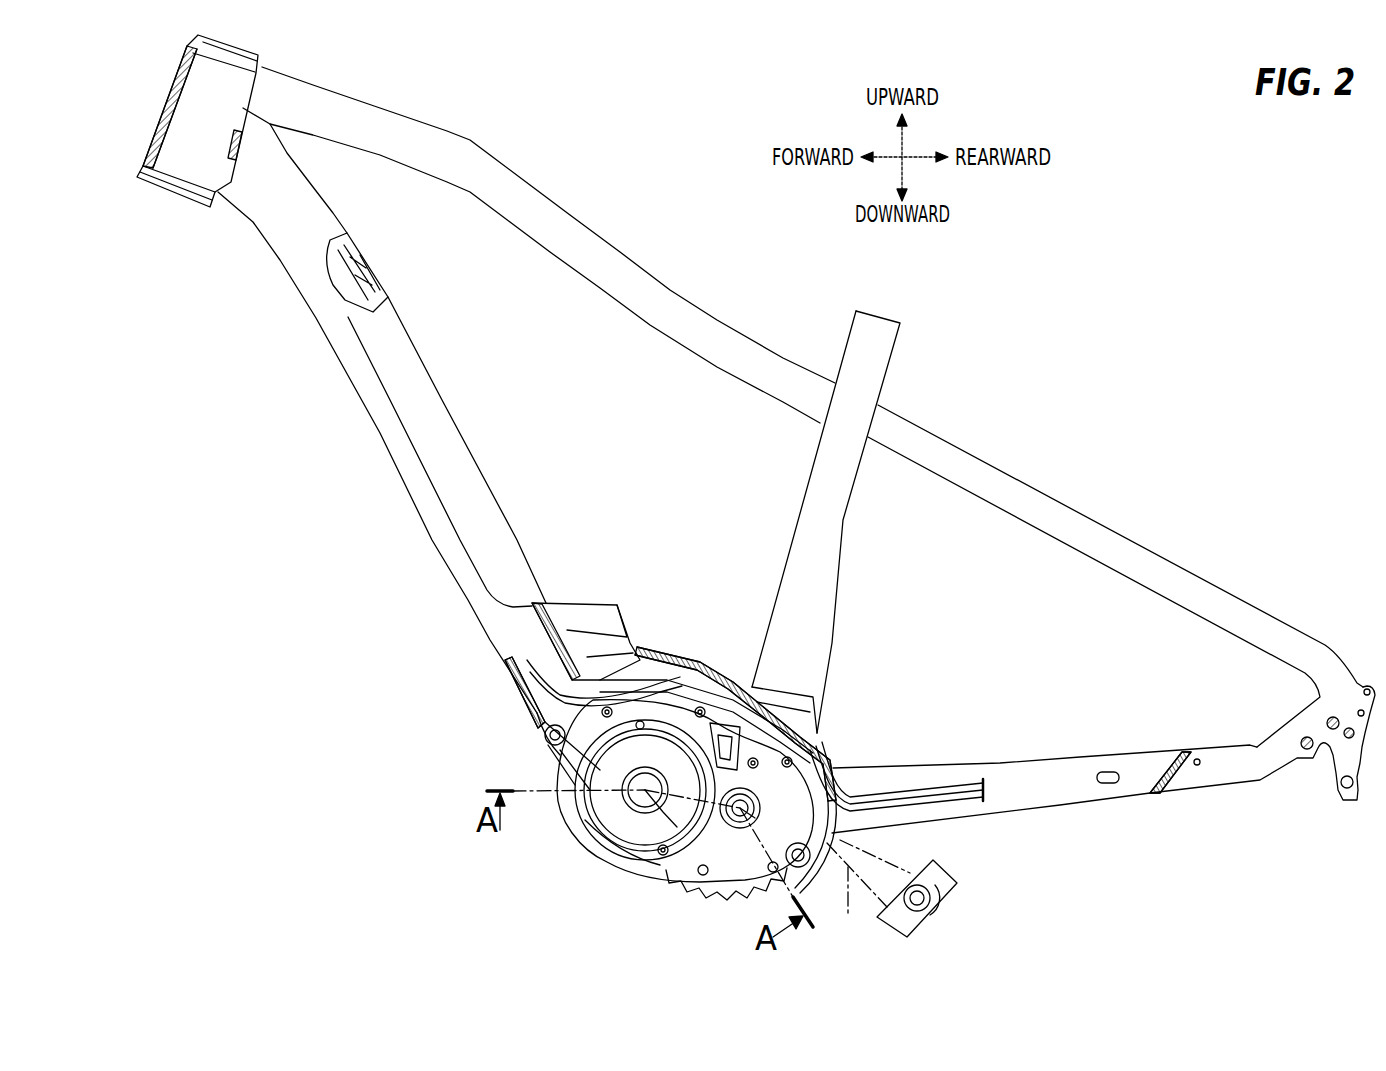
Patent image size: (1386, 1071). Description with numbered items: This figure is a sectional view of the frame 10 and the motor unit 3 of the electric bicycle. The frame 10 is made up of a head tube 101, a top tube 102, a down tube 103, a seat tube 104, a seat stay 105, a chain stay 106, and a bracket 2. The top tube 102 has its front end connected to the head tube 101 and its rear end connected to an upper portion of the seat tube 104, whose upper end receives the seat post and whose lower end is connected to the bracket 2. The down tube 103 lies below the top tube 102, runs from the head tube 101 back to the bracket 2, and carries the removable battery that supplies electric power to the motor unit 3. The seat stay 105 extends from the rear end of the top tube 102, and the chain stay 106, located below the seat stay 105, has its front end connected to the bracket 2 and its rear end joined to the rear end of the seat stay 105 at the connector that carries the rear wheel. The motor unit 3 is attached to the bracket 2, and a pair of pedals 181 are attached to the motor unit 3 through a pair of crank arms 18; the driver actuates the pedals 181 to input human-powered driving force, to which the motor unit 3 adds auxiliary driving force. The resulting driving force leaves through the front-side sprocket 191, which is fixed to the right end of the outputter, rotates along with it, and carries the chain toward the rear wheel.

The frame 10 is at (648, 233).
The head tube 101 is at (160, 115).
The top tube 102 is at (490, 157).
The down tube 103 is at (288, 272).
The seat tube 104 is at (893, 350).
The seat stay 105 is at (1134, 555).
The chain stay 106 is at (1068, 775).
The bracket 2 is at (722, 672).
The motor unit 3 is at (595, 840).
The crank arm 18 is at (841, 908).
The pedal 181 is at (947, 875).
The front-side sprocket 191 is at (710, 885).